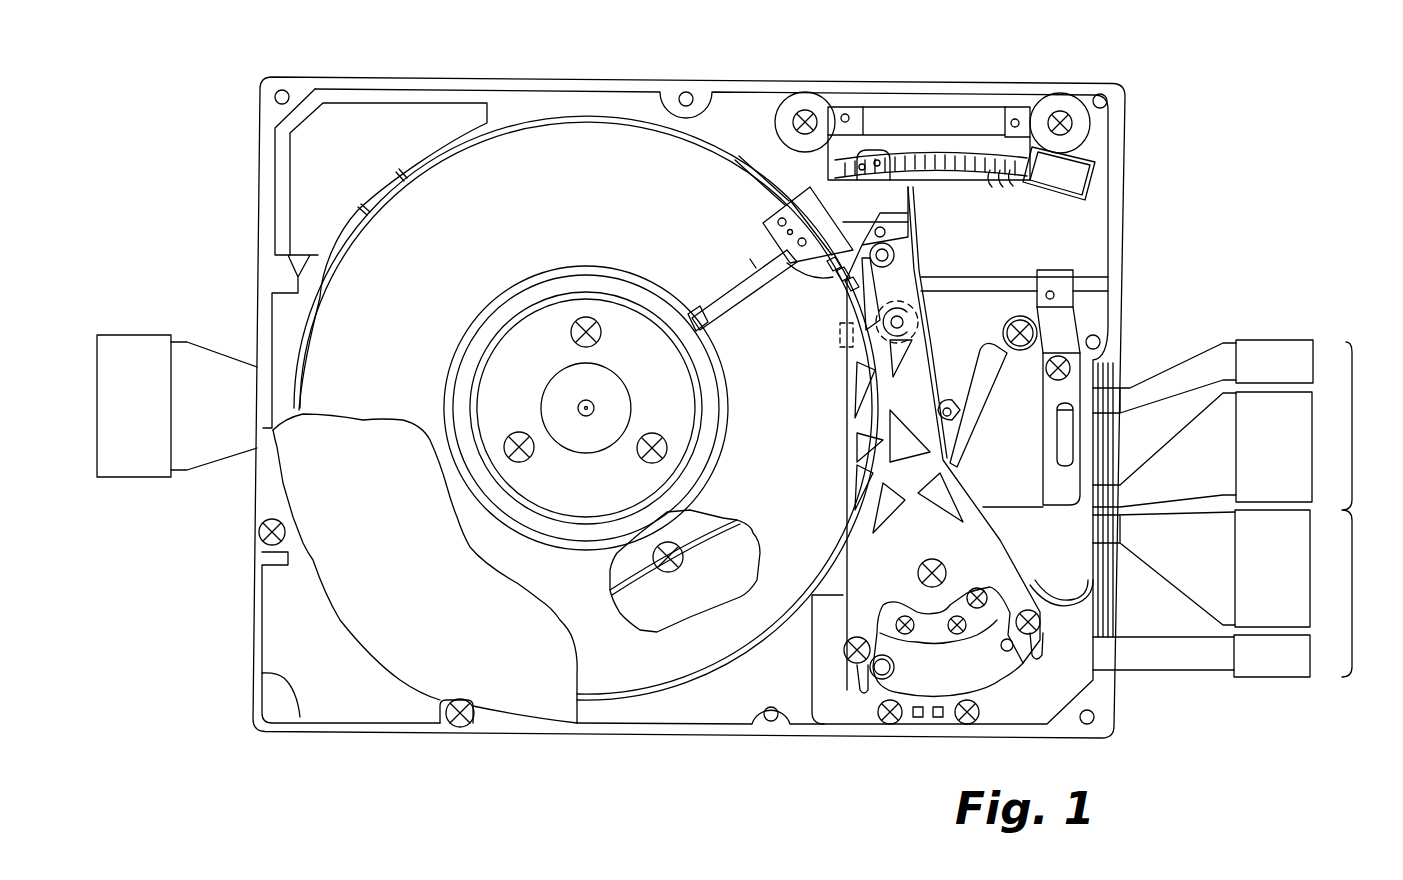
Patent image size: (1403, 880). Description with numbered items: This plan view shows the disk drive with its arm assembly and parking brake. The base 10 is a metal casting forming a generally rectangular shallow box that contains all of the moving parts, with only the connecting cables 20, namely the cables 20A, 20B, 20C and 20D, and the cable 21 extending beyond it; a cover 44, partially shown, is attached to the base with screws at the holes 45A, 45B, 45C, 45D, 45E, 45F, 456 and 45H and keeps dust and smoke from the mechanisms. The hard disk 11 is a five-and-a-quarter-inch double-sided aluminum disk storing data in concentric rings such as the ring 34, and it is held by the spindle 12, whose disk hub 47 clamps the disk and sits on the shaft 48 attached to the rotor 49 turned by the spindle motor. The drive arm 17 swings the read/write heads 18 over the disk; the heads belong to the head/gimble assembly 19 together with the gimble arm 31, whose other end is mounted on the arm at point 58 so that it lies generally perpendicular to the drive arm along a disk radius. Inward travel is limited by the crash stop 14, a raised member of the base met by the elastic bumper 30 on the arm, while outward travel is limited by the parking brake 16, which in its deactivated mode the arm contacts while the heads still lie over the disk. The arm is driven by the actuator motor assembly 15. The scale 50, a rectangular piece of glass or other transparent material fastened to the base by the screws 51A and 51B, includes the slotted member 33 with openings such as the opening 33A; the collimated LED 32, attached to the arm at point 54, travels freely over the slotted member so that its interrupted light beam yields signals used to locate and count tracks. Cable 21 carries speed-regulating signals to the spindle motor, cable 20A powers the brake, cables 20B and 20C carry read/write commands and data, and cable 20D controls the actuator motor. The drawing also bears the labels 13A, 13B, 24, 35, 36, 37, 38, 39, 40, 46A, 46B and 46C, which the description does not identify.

The base 10 is at (510, 77).
The hard disk 11 is at (628, 145).
The spindle assembly 12 is at (503, 312).
The latch slot 13A is at (830, 630).
The latch hook 13B is at (1048, 600).
The crash stop 14 is at (840, 326).
The actuator motor assembly 15 is at (932, 692).
The parking brake 16 is at (985, 380).
The drive arm 17 is at (860, 380).
The read/write heads 18 is at (722, 347).
The head/gimble assembly 19 is at (756, 242).
The connecting cables 20 is at (1242, 508).
The cable 20A is at (1203, 376).
The cable 20B is at (1202, 449).
The cable 20C is at (1201, 568).
The cable 20D is at (1201, 656).
The cable 21 is at (136, 348).
The coil support 24 is at (936, 631).
The elastic bumper 30 is at (912, 300).
The gimble arm 31 is at (728, 286).
The collimated LED 32 is at (878, 158).
The slotted member 33 is at (982, 148).
The opening 33A is at (1002, 191).
The ring 34 is at (729, 410).
The latch post 35 is at (855, 664).
The latch post 36 is at (1036, 645).
The screw 37 is at (896, 622).
The screw 38 is at (953, 605).
The screw 39 is at (886, 724).
The screw 40 is at (970, 724).
The cover 44 is at (548, 705).
The attaching hole 45A is at (262, 540).
The attaching hole 45B is at (460, 727).
The attaching hole 45C is at (765, 722).
The attaching hole 45D is at (1094, 718).
The attaching hole 45E is at (1101, 341).
The attaching hole 45F is at (1108, 103).
The attaching hole 45H is at (283, 90).
The mounting hole 456 is at (690, 93).
The hub screw 46A is at (512, 460).
The hub screw 46B is at (665, 450).
The hub screw 46C is at (590, 318).
The disk hub 47 is at (498, 383).
The shaft 48 is at (585, 435).
The rotor 49 is at (688, 556).
The scale 50 is at (952, 122).
The screw 51A is at (808, 108).
The screw 51B is at (1064, 110).
The opening 54 is at (888, 230).
The opening 58 is at (772, 212).